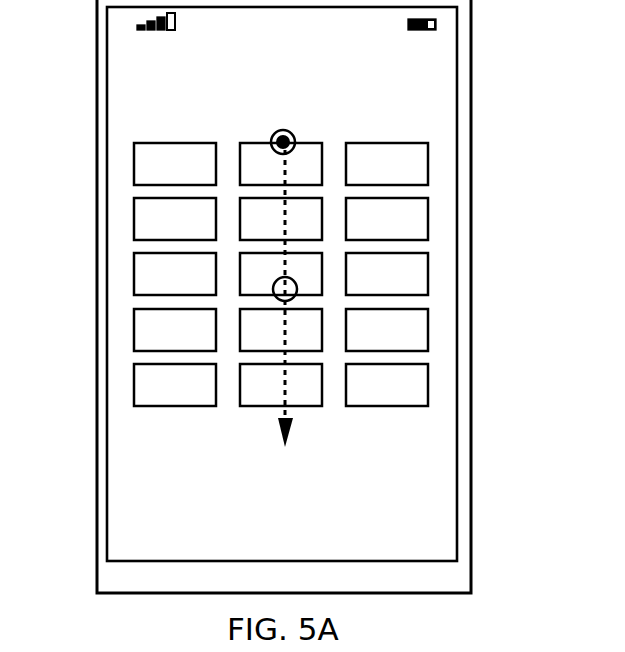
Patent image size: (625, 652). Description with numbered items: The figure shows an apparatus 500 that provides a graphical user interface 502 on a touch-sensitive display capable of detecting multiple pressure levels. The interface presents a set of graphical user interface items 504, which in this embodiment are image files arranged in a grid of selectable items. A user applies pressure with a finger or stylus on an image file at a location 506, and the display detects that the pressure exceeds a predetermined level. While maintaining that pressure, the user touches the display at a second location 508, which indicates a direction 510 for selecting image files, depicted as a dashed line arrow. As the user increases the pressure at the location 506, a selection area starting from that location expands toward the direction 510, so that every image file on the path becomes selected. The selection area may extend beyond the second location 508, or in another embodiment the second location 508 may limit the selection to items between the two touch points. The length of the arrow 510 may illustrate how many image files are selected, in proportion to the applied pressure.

The apparatus 500 is at (471, 502).
The graphical user interface 502 is at (457, 467).
The graphical user interface items 504 is at (430, 143).
The image file / touch location 506 is at (292, 134).
The second location 508 is at (273, 294).
The direction 510 is at (278, 430).